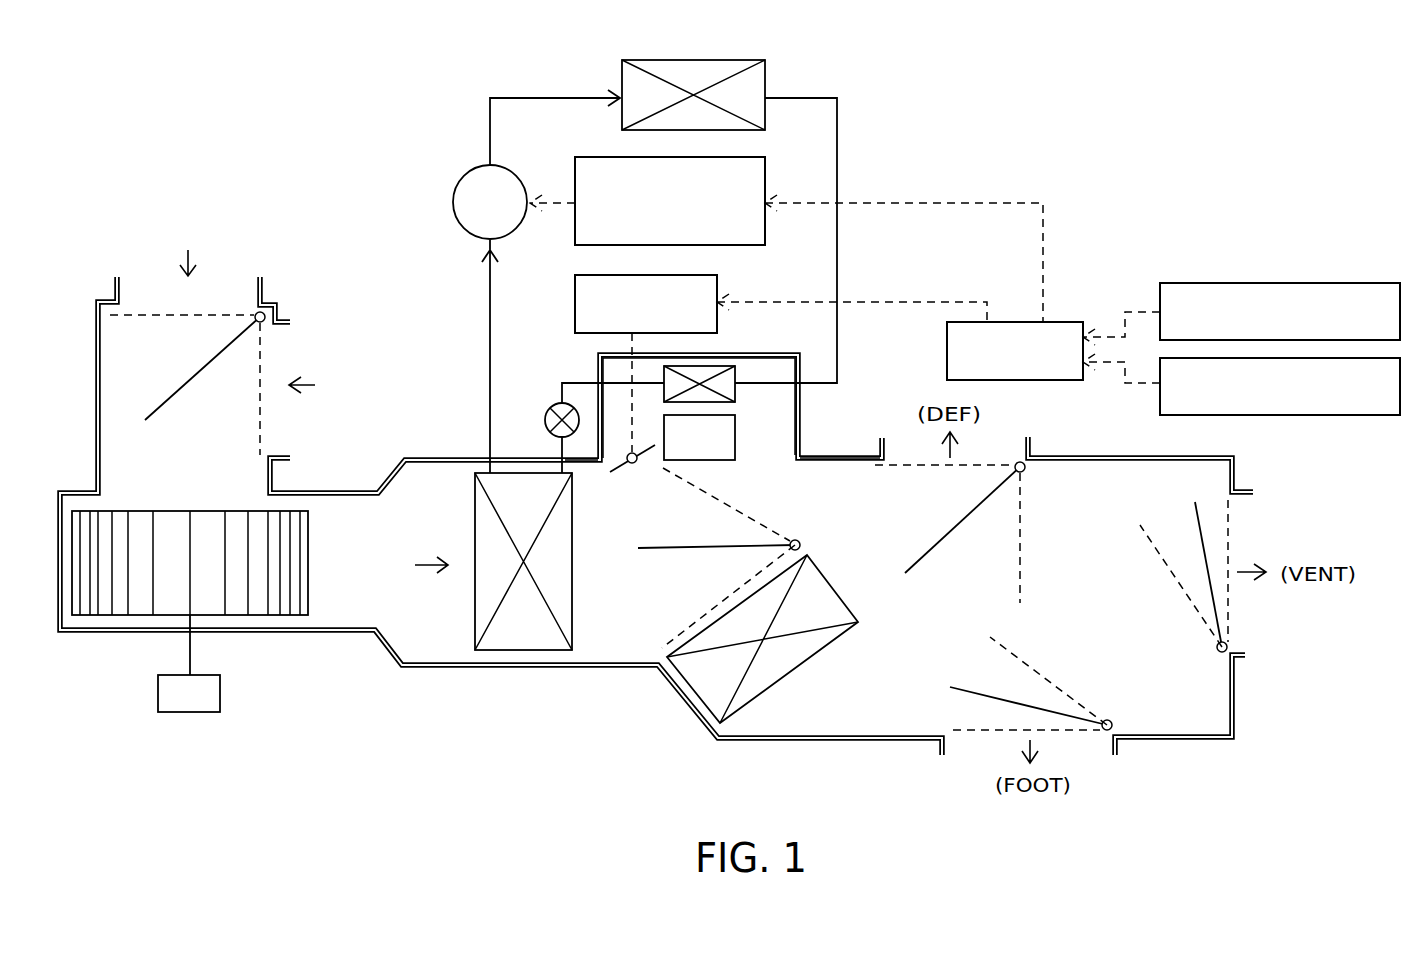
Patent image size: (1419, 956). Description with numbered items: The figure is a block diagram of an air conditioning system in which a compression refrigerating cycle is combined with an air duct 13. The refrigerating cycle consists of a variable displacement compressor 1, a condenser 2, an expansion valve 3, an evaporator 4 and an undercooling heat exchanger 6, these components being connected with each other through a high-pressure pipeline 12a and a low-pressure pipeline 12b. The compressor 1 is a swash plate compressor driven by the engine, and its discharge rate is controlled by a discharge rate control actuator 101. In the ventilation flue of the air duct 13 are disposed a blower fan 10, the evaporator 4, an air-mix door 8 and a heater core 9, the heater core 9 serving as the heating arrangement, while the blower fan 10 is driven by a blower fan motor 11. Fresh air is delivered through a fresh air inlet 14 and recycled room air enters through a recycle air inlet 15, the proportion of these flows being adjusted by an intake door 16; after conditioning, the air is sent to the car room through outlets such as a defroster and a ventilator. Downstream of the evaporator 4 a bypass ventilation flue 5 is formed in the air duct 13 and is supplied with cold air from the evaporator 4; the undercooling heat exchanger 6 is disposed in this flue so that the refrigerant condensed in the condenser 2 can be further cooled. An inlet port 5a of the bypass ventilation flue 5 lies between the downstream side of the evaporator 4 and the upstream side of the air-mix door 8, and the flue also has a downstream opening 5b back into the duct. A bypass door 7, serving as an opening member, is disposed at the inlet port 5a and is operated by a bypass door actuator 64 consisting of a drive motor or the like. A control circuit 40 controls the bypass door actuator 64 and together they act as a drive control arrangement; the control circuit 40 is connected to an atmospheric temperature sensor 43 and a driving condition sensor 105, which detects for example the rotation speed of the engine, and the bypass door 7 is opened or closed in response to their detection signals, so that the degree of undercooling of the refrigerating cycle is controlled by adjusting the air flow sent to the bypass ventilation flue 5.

The variable displacement compressor 1 is at (500, 168).
The condenser 2 is at (705, 62).
The expansion valve 3 is at (545, 425).
The evaporator 4 is at (572, 613).
The bypass ventilation flue 5 is at (740, 355).
The inlet port 5a is at (598, 441).
The bypass passage outlet 5b is at (825, 442).
The undercooling heat exchanger 6 is at (735, 390).
The bypass door 7 is at (640, 465).
The air-mix door 8 is at (662, 548).
The heater core 9 is at (840, 585).
The blower fan 10 is at (165, 510).
The blower fan motor 11 is at (220, 685).
The high-pressure pipeline 12a is at (837, 240).
The low-pressure pipeline 12b is at (492, 352).
The air duct 13 is at (100, 635).
The fresh air inlet 14 is at (195, 240).
The recycle air inlet 15 is at (322, 380).
The intake door 16 is at (208, 392).
The control circuit 40 is at (1057, 322).
The atmospheric temperature sensor 43 is at (1255, 283).
The bypass door actuator 64 is at (717, 285).
The discharge rate control actuator 101 is at (765, 165).
The driving condition sensor 105 is at (1373, 415).